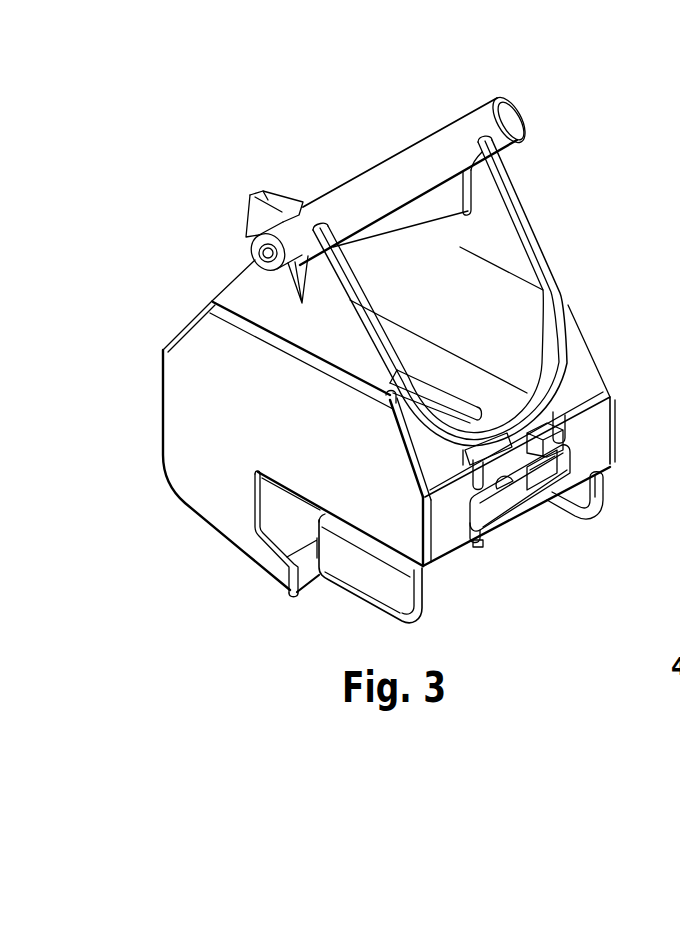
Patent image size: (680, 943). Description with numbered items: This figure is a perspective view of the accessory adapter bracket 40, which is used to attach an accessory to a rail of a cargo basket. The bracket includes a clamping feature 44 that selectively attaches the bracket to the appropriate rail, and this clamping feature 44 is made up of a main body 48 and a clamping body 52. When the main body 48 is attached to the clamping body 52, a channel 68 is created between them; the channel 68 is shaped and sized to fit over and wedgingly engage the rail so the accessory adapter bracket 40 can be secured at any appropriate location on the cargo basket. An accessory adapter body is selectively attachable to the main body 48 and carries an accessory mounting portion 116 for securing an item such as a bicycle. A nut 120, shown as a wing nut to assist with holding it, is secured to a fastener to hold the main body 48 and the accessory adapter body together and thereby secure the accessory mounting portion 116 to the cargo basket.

The accessory adapter bracket 40 is at (338, 167).
The clamping feature 44 is at (292, 603).
The main body 48 is at (222, 370).
The clamping body 52 is at (373, 582).
The channel 68 is at (303, 525).
The accessory mounting portion 116 is at (462, 130).
The nut 120 is at (262, 200).